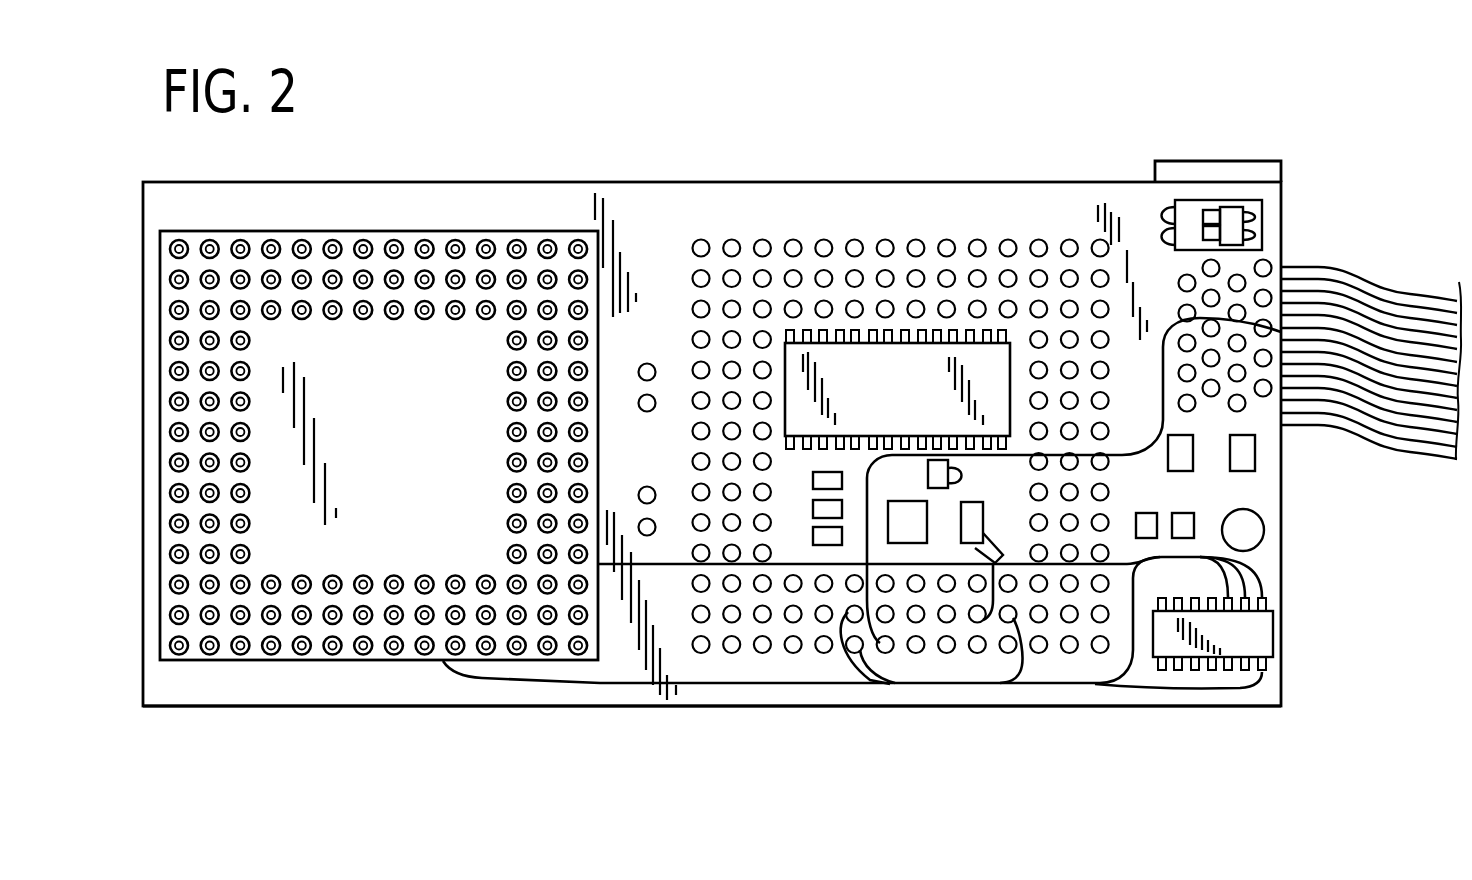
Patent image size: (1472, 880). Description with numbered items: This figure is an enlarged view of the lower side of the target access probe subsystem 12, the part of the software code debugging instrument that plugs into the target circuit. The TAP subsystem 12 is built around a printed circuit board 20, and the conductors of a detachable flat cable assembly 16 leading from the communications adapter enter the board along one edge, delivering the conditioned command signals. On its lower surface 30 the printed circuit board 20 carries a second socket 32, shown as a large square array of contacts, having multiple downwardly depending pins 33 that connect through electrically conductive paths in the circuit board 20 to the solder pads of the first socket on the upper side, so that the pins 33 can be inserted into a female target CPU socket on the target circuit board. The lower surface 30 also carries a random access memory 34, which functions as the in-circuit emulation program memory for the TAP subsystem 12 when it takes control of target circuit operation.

The target access probe subsystem 12 is at (514, 182).
The detachable flat cable assembly 16 is at (1369, 276).
The printed circuit board 20 is at (1030, 708).
The lower surface 30 is at (826, 697).
The second socket 32 is at (187, 661).
The pins 33 is at (271, 652).
The random access memory 34 is at (884, 394).